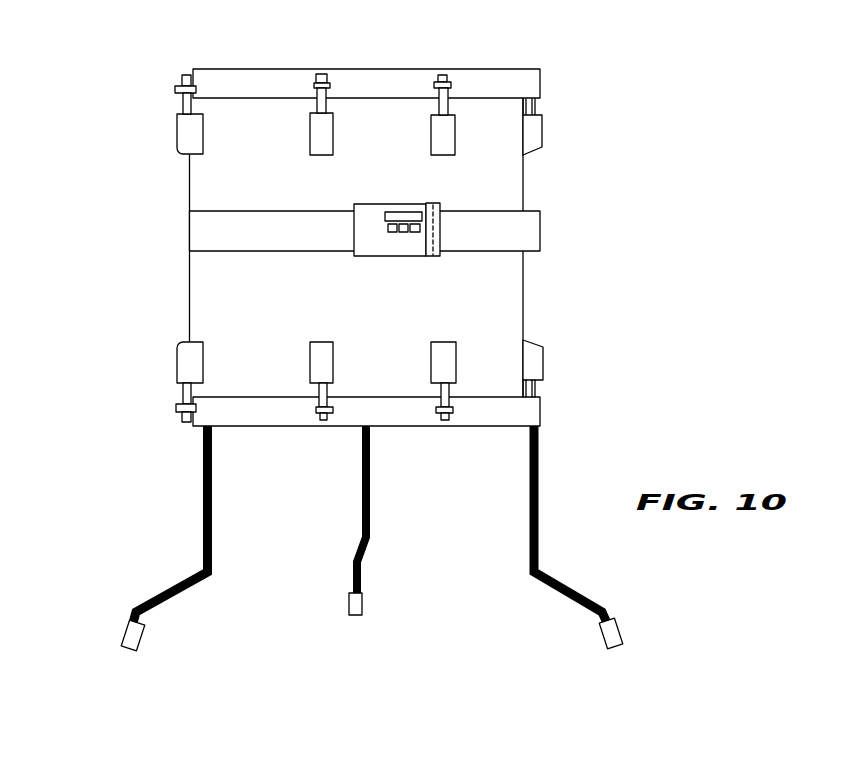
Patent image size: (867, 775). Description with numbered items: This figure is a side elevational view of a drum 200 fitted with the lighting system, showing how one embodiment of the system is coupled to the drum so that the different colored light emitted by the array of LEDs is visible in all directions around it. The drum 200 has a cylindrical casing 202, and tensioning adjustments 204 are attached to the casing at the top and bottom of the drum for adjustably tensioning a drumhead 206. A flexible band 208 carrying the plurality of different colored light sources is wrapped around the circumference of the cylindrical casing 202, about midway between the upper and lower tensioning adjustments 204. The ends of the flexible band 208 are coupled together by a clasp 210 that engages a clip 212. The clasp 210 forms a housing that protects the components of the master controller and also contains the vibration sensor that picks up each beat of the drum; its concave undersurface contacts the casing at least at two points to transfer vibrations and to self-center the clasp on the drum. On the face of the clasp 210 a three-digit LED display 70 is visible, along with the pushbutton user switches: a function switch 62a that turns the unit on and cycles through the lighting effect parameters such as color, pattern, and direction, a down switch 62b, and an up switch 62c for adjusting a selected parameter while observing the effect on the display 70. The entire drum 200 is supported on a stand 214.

The drum 200 is at (122, 307).
The cylindrical casing 202 is at (531, 293).
The tensioning adjustments 204 is at (176, 137).
The drumhead 206 is at (243, 68).
The flexible band 208 is at (188, 236).
The clasp 210 is at (378, 256).
The clip 212 is at (444, 219).
The stand 214 is at (203, 489).
The three-digit LED display 70 is at (398, 213).
The function switch 62a is at (388, 228).
The down switch 62b is at (400, 232).
The up switch 62c is at (416, 232).